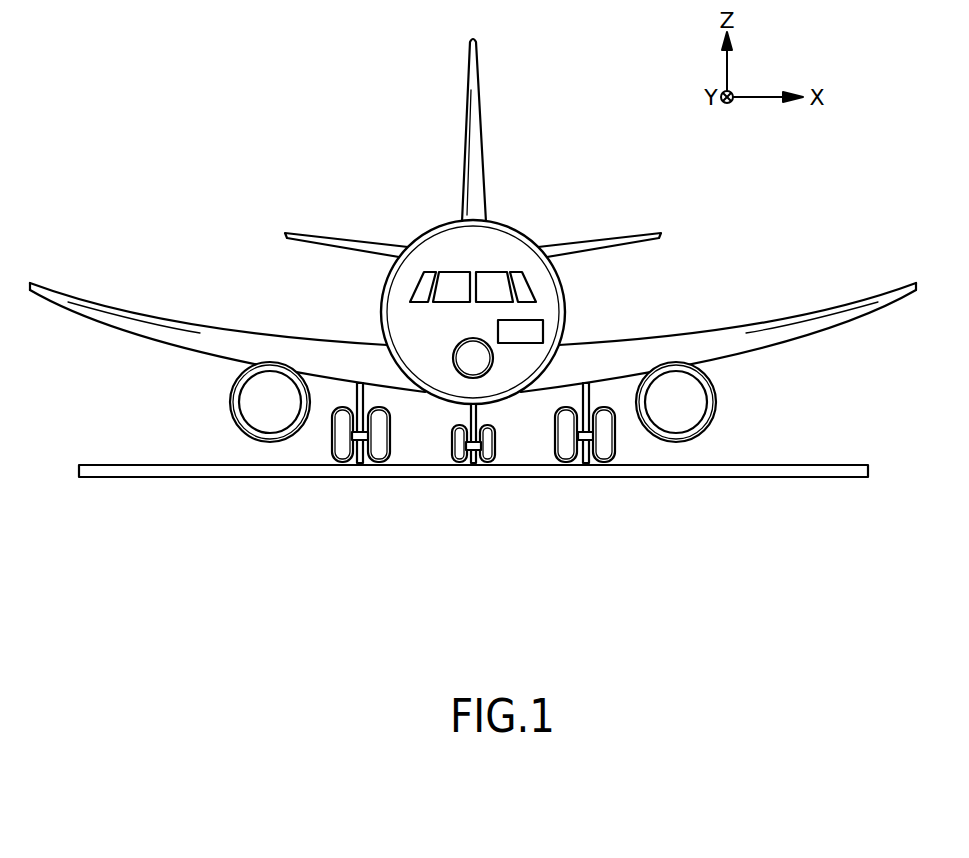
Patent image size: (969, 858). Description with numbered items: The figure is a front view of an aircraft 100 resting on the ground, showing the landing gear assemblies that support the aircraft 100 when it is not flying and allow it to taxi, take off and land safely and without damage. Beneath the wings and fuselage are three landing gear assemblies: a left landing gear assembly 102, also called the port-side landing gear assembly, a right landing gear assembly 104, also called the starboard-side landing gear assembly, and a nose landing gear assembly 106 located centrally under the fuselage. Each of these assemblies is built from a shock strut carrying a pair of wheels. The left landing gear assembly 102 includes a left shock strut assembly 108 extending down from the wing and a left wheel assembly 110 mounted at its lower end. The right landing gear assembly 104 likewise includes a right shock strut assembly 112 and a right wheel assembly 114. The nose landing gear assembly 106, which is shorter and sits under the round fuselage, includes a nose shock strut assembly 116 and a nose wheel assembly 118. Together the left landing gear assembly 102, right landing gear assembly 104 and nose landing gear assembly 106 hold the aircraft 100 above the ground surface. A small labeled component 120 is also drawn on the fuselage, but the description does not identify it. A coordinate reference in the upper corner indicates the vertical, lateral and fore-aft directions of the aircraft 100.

The aircraft 100 is at (312, 128).
The left landing gear assembly 102 is at (636, 452).
The right landing gear assembly 104 is at (336, 388).
The nose landing gear assembly 106 is at (436, 458).
The left shock strut assembly 108 is at (582, 394).
The left wheel assembly 110 is at (586, 442).
The right shock strut assembly 112 is at (352, 437).
The right wheel assembly 114 is at (360, 458).
The nose shock strut assembly 116 is at (484, 407).
The nose wheel assembly 118 is at (472, 462).
The controller 120 is at (533, 333).